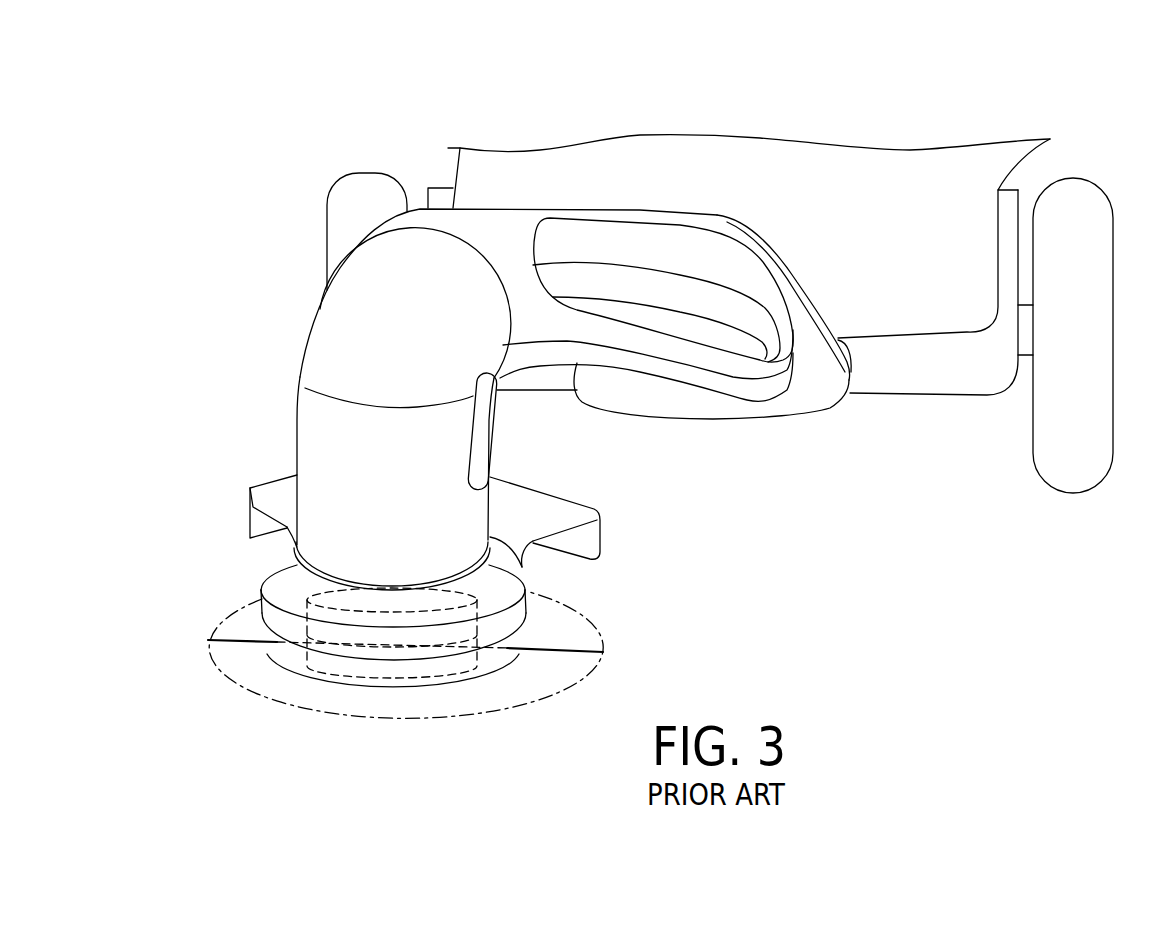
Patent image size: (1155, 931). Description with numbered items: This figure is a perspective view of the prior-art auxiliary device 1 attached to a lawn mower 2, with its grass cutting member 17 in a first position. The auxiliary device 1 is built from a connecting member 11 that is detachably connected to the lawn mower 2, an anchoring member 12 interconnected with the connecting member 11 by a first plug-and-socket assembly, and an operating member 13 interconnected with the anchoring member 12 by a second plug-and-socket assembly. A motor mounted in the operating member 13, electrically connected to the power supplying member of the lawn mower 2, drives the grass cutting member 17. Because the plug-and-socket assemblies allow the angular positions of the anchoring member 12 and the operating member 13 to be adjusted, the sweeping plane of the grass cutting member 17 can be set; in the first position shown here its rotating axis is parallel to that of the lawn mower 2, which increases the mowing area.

The auxiliary device 1 is at (240, 306).
The lawn mower 2 is at (930, 136).
The connecting member 11 is at (827, 397).
The anchoring member 12 is at (495, 228).
The operating member 13 is at (317, 430).
The grass cutting member 17 is at (557, 647).